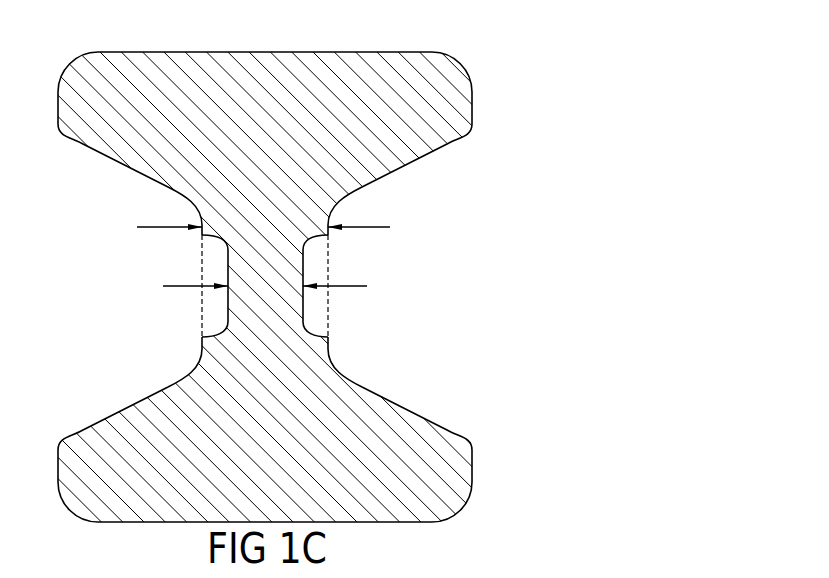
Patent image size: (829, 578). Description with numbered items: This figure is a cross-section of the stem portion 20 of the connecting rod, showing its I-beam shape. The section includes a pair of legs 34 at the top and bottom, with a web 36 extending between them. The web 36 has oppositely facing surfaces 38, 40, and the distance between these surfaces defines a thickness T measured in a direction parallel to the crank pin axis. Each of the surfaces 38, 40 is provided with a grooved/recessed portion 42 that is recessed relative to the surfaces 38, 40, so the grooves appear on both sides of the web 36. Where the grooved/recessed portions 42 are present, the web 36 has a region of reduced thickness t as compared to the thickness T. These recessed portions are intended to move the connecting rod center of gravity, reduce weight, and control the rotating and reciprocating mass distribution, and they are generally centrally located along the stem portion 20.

The stem portion 20 is at (487, 79).
The legs 34 is at (132, 167).
The web 36 is at (356, 341).
The surface 38 is at (197, 373).
The surface 40 is at (335, 370).
The grooved/recessed portion 42 is at (227, 263).
The thickness T is at (270, 228).
The reduced thickness t is at (261, 286).